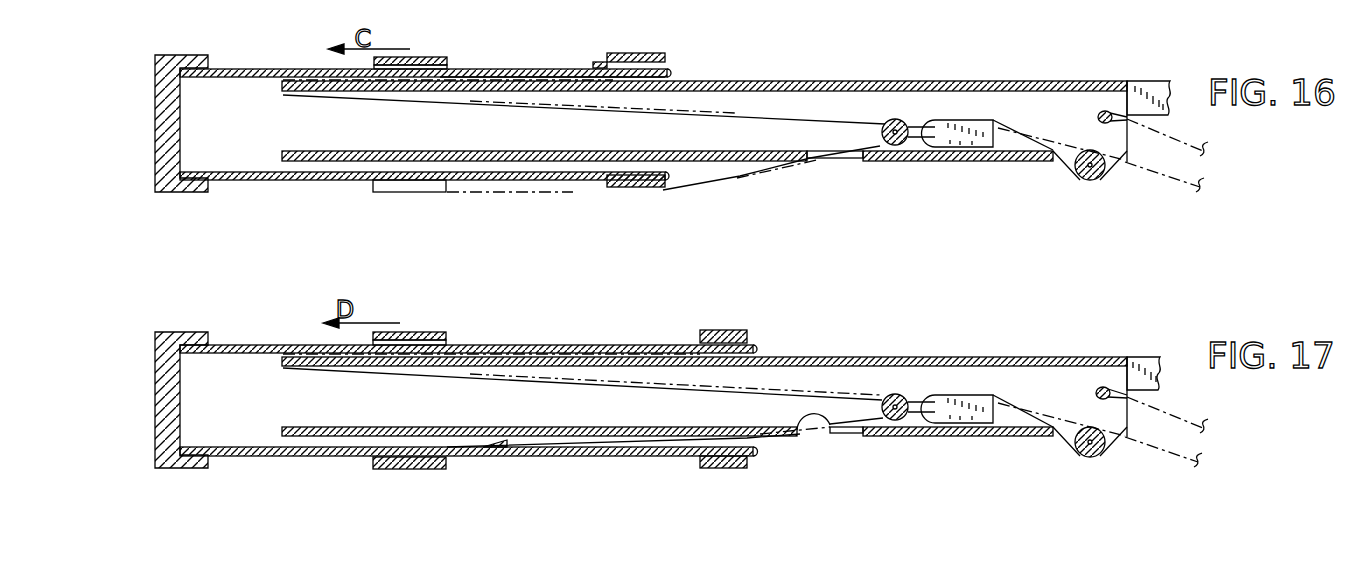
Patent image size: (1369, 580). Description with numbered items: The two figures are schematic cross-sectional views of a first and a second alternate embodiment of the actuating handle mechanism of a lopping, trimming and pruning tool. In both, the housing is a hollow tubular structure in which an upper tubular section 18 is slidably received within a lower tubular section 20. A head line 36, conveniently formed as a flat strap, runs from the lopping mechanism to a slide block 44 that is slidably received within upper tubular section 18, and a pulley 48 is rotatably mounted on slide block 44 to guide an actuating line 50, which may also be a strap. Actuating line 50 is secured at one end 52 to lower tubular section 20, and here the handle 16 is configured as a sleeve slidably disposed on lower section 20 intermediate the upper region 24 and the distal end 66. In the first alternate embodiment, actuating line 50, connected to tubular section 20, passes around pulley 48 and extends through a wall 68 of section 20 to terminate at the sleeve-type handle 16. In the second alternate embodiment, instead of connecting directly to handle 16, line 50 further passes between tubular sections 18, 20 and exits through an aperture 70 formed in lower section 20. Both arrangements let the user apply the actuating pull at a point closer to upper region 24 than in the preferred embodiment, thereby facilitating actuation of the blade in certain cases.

In FIG. 16, the actuating handle 16 is at (435, 57).
In FIG. 17, the actuating handle 16 is at (443, 332).
In FIG. 16, the upper tubular section 18 is at (900, 81).
In FIG. 17, the upper tubular section 18 is at (887, 357).
In FIG. 16, the lower tubular section 20 is at (547, 68).
In FIG. 17, the lower tubular section 20 is at (222, 345).
In FIG. 16, the upper region 24 is at (620, 187).
In FIG. 17, the upper region 24 is at (718, 468).
In FIG. 16, the head line 36 is at (1173, 178).
In FIG. 17, the head line 36 is at (1173, 457).
In FIG. 16, the slide block 44 is at (951, 148).
In FIG. 17, the slide block 44 is at (951, 424).
In FIG. 16, the pulley 48 is at (888, 146).
In FIG. 17, the pulley 48 is at (891, 422).
In FIG. 16, the actuating line 50 is at (734, 110).
In FIG. 17, the actuating line 50 is at (787, 388).
In FIG. 16, the end of actuating line 52 is at (633, 53).
In FIG. 17, the end of actuating line 52 is at (736, 330).
In FIG. 16, the distal end 66 is at (190, 186).
In FIG. 17, the distal end 66 is at (180, 468).
In FIG. 16, the wall 68 is at (742, 152).
In FIG. 17, the wall 68 is at (828, 437).
In FIG. 17, the aperture 70 is at (485, 452).